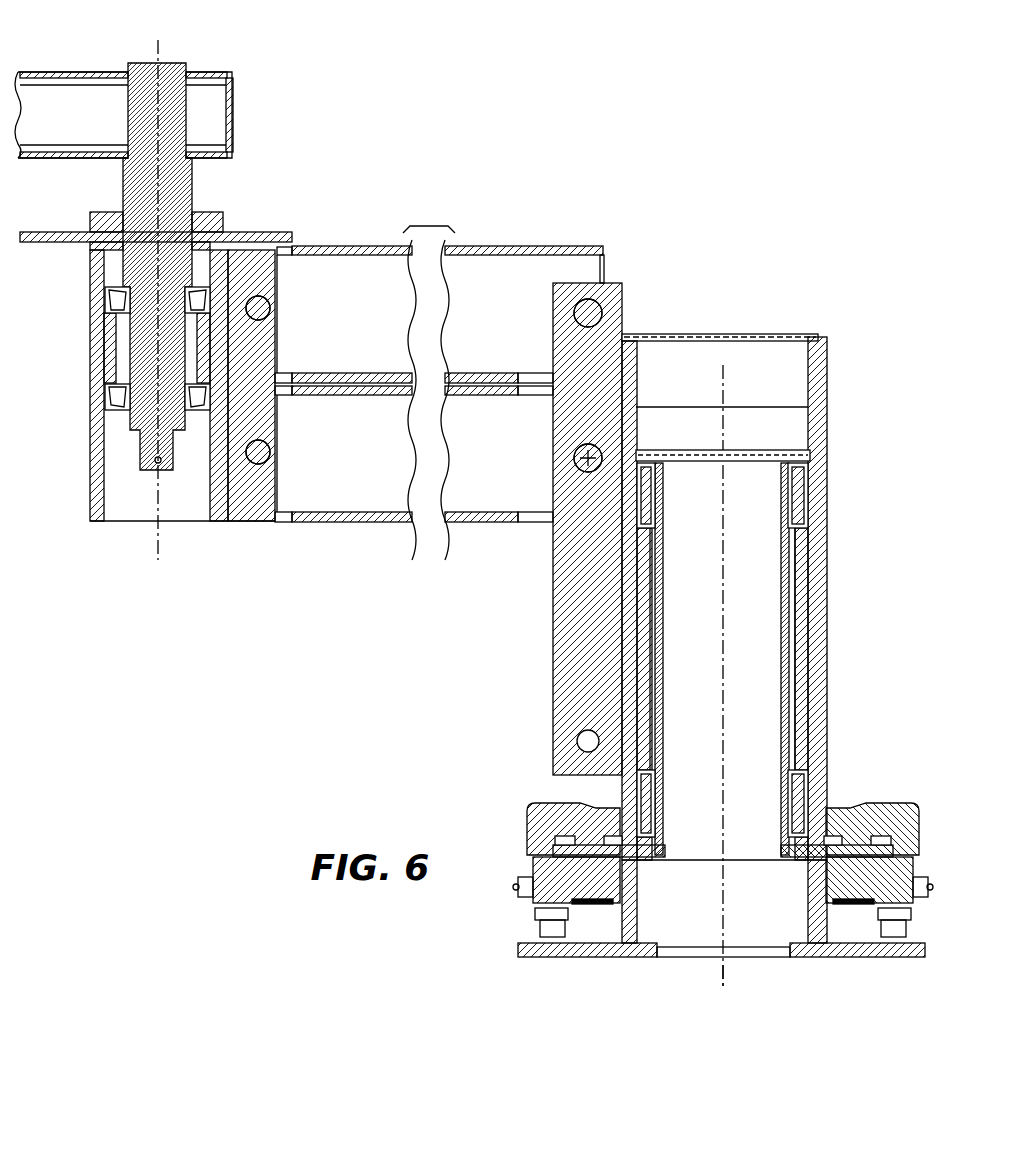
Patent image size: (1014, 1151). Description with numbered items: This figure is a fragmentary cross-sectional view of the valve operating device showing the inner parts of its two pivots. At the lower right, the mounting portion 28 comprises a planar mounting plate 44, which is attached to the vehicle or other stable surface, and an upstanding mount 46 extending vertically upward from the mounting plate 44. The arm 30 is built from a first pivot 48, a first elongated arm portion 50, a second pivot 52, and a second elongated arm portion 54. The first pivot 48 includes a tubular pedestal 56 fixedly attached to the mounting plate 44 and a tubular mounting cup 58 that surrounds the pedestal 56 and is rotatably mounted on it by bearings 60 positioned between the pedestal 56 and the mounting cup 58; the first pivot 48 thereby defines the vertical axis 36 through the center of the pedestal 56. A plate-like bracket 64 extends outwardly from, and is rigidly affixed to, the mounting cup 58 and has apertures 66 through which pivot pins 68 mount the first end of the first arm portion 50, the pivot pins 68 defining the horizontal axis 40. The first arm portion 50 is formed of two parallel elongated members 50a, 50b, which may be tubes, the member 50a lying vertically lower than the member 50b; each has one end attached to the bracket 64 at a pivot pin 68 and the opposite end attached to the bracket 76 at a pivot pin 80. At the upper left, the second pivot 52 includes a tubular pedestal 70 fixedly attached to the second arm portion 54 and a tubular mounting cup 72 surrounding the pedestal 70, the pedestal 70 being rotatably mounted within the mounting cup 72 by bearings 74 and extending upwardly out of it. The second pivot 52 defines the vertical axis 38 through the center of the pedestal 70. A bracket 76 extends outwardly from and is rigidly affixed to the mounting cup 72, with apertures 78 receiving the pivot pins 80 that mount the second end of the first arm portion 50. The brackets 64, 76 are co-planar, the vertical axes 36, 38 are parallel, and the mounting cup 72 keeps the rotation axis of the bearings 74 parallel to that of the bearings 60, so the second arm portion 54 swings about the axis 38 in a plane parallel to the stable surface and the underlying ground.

The mounting portion 28 is at (582, 960).
The arm 30 is at (509, 245).
The vertical axis 36 is at (718, 980).
The vertical axis 38 is at (155, 535).
The horizontal axis 40 is at (603, 462).
The mounting plate 44 is at (562, 952).
The upstanding mount 46 is at (810, 915).
The first pivot 48 is at (756, 639).
The first elongated arm portion 50 is at (414, 399).
The elongated member 50a is at (352, 488).
The elongated member 50b is at (352, 283).
The second pivot 52 is at (150, 366).
The second elongated arm portion 54 is at (57, 72).
The pedestal 56 is at (797, 670).
The mounting cup 58 is at (818, 730).
The bearings 60 is at (810, 498).
The bracket 64 is at (572, 652).
The apertures 66 is at (602, 318).
The pivot pins 68 is at (588, 300).
The pedestal 70 is at (150, 349).
The mounting cup 72 is at (97, 478).
The bearings 74 is at (107, 290).
The bracket 76 is at (240, 512).
The apertures 78 is at (280, 310).
The pivot pins 80 is at (258, 296).